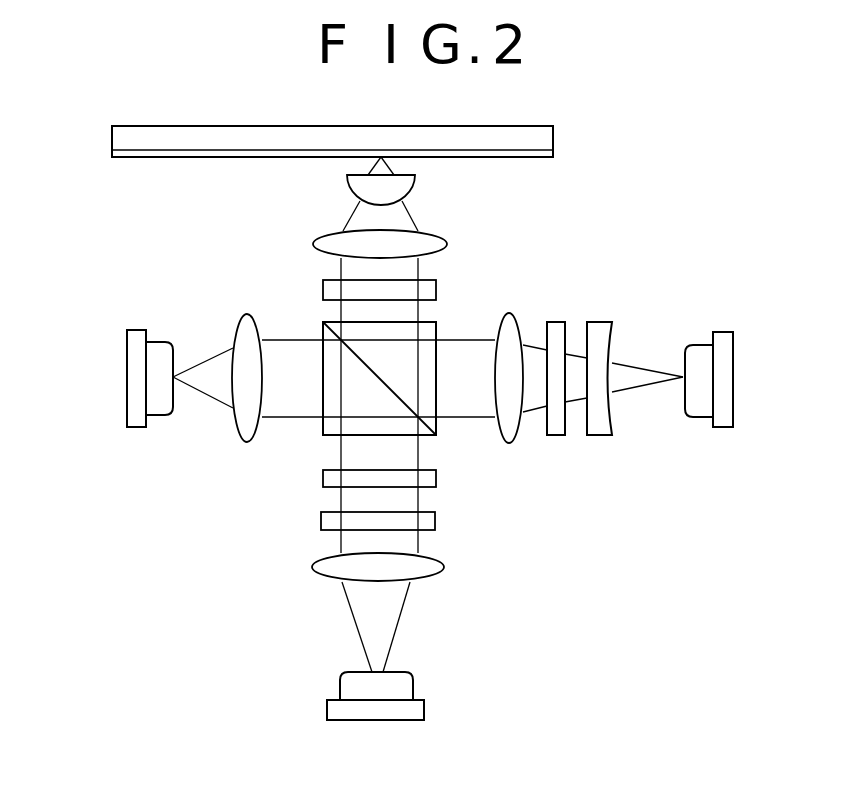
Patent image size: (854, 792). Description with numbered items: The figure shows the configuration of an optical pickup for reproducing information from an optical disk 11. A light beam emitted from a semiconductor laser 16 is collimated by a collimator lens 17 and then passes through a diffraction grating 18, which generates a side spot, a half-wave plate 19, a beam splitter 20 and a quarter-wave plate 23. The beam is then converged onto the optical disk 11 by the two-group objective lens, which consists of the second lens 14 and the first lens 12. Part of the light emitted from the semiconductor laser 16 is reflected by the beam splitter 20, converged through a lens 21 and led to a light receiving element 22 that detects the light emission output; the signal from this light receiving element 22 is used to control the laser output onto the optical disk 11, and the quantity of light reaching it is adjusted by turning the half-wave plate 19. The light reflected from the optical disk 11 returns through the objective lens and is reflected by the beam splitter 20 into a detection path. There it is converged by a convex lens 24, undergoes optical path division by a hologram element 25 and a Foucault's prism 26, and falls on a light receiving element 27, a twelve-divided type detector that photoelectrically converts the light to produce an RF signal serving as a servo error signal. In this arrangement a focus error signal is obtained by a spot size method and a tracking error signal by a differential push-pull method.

The optical disk 11 is at (540, 124).
The first lens 12 is at (405, 181).
The second lens 14 is at (447, 244).
The semiconductor laser 16 is at (425, 712).
The collimator lens 17 is at (437, 567).
The diffraction grating 18 is at (437, 523).
The half-wave plate 19 is at (437, 482).
The beam splitter 20 is at (323, 325).
The lens 21 is at (246, 438).
The light receiving element 22 is at (132, 428).
The quarter-wave plate 23 is at (436, 292).
The convex lens 24 is at (512, 325).
The hologram element 25 is at (556, 437).
The Foucault's prism 26 is at (594, 437).
The light receiving element 27 is at (720, 332).